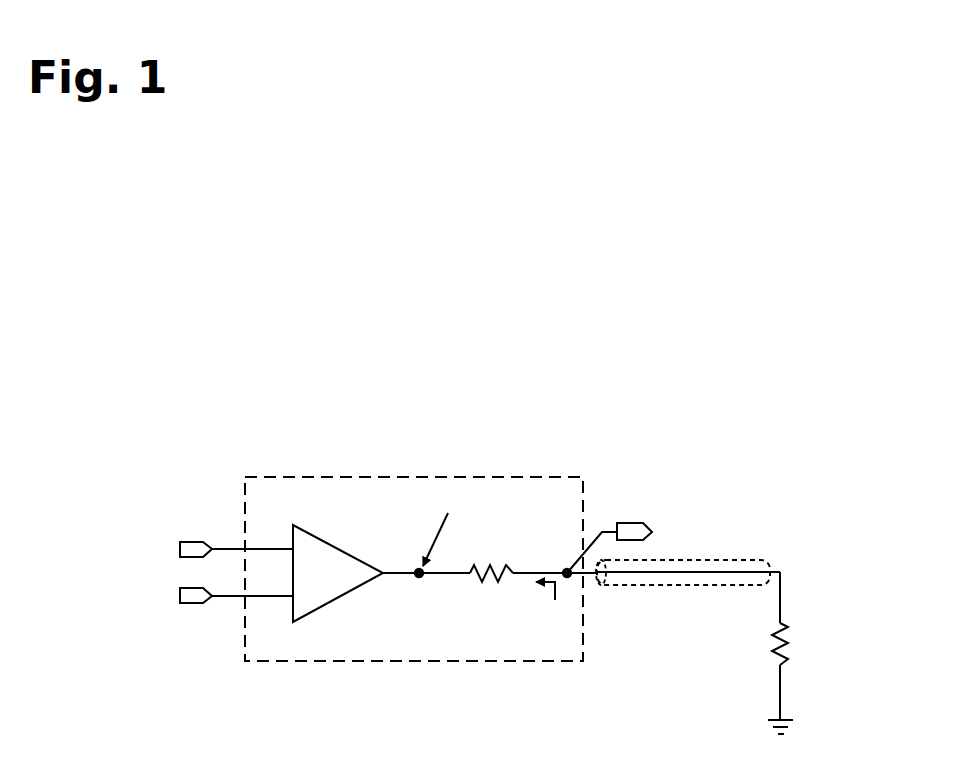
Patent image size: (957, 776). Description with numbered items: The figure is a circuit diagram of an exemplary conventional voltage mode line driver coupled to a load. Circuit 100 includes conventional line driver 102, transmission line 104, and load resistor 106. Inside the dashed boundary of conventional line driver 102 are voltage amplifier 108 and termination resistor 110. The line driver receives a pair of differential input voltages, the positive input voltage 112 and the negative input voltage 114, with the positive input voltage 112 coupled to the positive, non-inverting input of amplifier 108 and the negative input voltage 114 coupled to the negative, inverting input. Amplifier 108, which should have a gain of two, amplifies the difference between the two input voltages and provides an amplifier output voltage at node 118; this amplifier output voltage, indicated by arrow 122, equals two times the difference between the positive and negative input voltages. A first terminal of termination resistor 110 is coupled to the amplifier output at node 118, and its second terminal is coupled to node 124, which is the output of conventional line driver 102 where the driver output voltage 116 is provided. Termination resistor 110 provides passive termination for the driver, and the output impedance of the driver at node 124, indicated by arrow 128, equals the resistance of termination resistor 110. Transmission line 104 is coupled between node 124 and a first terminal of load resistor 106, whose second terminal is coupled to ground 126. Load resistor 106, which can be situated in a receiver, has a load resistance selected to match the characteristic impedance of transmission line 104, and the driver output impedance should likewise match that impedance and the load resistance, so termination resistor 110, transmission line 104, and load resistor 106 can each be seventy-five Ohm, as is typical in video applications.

The circuit 100 is at (808, 139).
The conventional line driver 102 is at (437, 475).
The transmission line 104 is at (670, 586).
The load resistor 106 is at (773, 645).
The voltage amplifier 108 is at (332, 541).
The termination resistor 110 is at (468, 578).
The differential input voltage VIP 112 is at (180, 549).
The differential input voltage VIN 114 is at (180, 596).
The output voltage VOUT 116 is at (650, 536).
The node 118 is at (414, 579).
The arrow 122 is at (433, 538).
The node 124 is at (564, 567).
The ground 126 is at (776, 719).
The arrow 128 is at (555, 593).